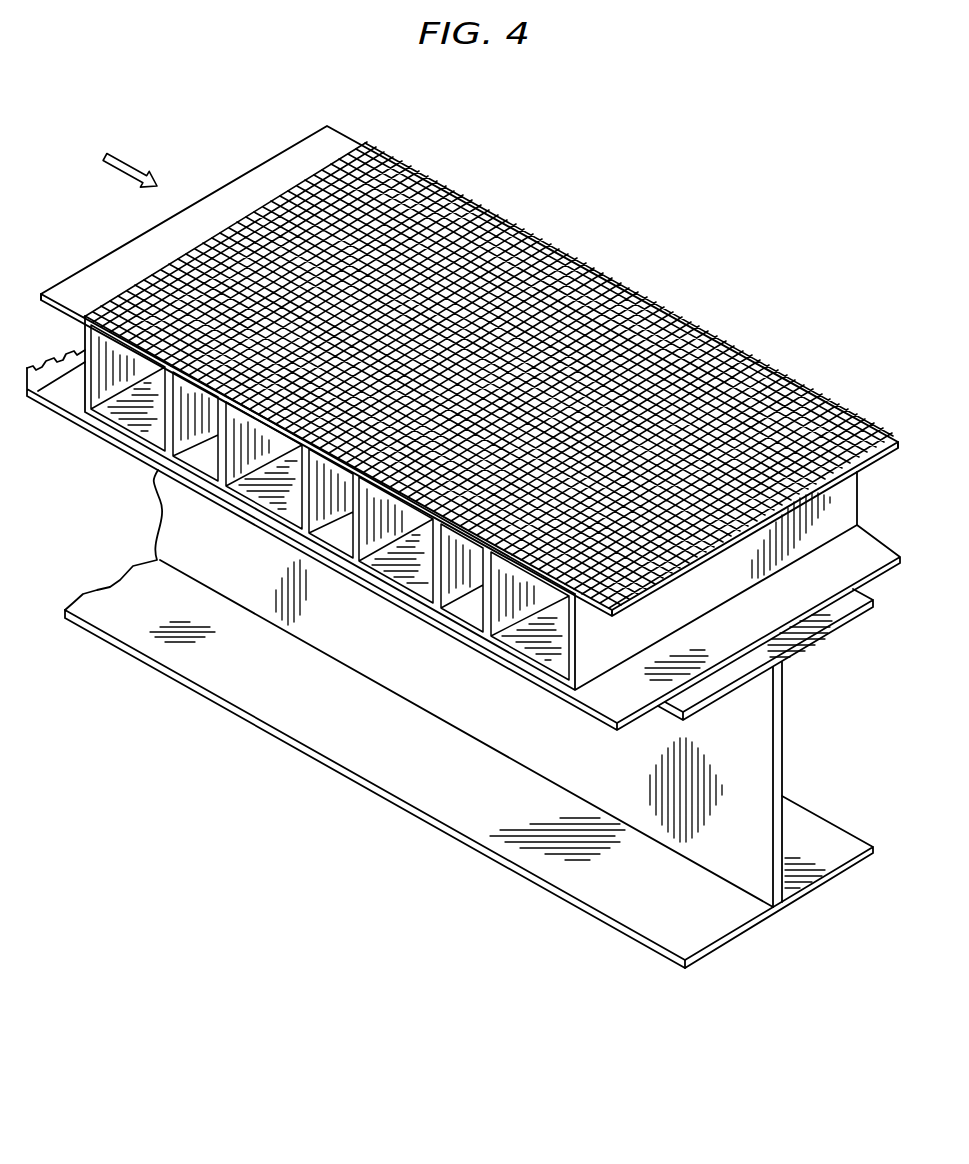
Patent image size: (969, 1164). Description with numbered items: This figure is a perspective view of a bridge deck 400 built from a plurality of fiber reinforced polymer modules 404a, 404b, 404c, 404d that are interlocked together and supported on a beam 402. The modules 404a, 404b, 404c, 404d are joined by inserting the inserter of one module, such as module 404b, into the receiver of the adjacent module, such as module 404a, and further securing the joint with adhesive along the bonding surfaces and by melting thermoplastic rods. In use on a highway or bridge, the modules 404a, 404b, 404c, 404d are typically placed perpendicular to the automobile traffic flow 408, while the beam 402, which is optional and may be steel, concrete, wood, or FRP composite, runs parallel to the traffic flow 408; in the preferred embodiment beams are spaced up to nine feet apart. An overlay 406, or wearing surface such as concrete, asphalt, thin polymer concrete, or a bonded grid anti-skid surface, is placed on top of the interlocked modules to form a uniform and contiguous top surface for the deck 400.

The bridge deck 400 is at (848, 355).
The beam 402 is at (782, 753).
The FRP module 404a is at (140, 428).
The FRP module 404b is at (272, 508).
The FRP module 404c is at (410, 577).
The FRP module 404d is at (542, 652).
The overlay 406 is at (687, 320).
The traffic flow 408 is at (117, 172).